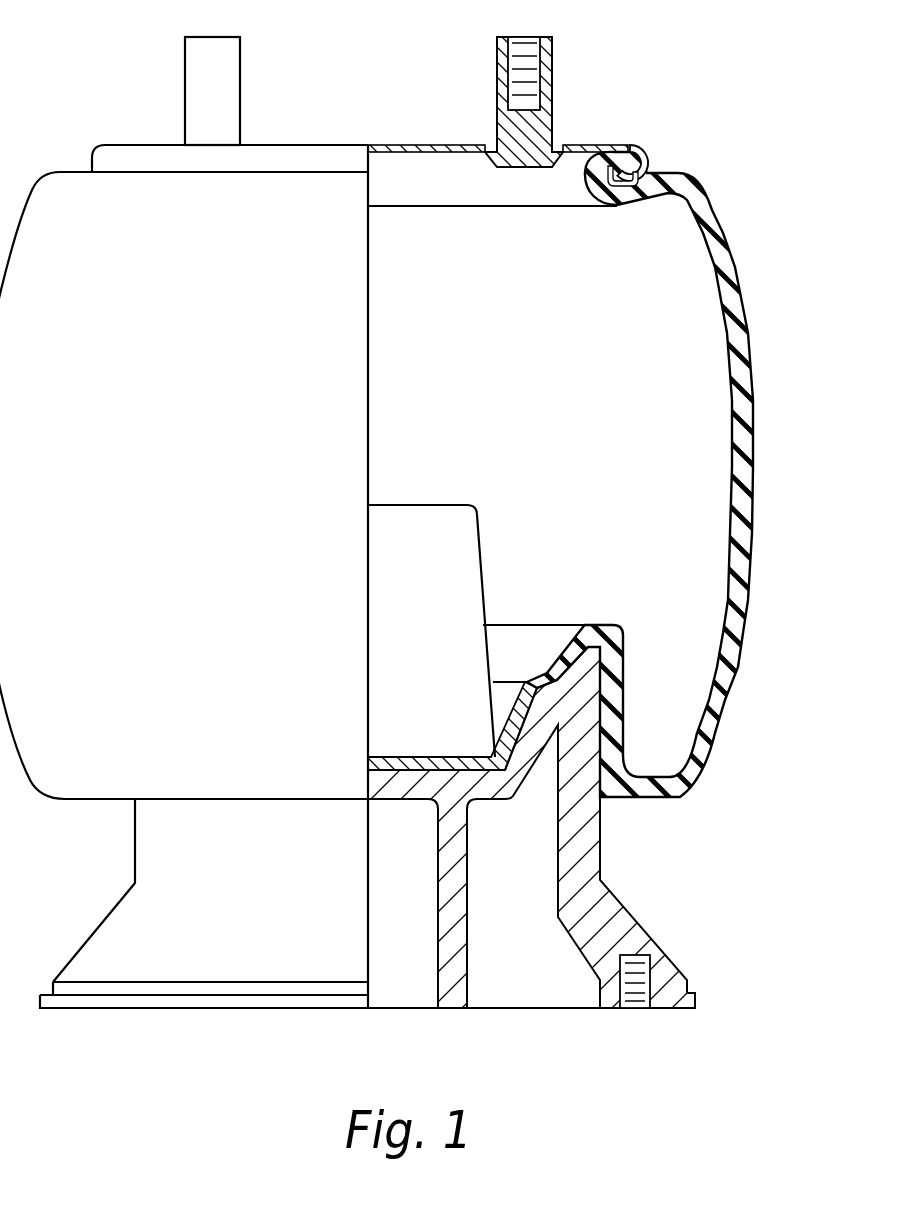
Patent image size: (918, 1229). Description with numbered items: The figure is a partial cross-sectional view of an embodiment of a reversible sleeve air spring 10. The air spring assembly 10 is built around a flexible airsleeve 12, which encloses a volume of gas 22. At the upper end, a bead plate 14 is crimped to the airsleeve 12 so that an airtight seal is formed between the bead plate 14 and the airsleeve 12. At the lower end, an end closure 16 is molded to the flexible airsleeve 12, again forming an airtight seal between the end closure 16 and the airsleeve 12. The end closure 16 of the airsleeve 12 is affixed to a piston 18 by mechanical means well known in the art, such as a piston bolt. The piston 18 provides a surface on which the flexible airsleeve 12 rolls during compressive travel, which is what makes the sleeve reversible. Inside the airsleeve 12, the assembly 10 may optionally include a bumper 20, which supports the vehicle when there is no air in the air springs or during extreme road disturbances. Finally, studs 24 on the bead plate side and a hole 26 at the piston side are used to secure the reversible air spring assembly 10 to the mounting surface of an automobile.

The reversible sleeve air spring 10 is at (772, 196).
The flexible airsleeve 12 is at (755, 402).
The bead plate 14 is at (647, 160).
The end closure 16 is at (517, 715).
The piston 18 is at (613, 908).
The bumper 20 is at (428, 573).
The volume of gas 22 is at (560, 438).
The studs 24 is at (185, 70).
The hole 26 is at (633, 990).